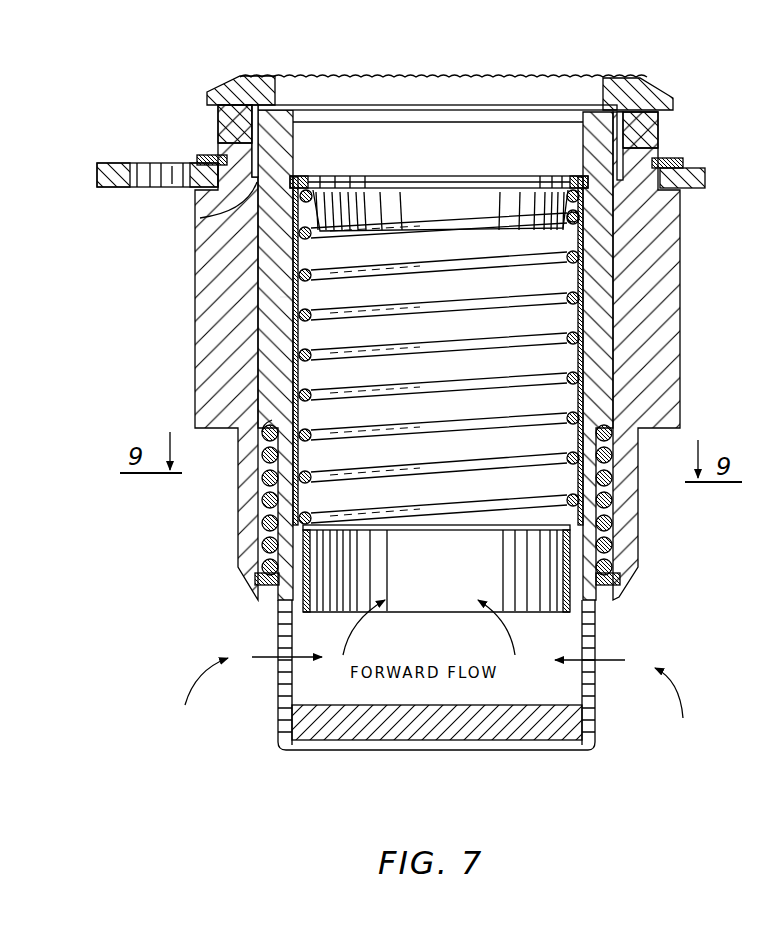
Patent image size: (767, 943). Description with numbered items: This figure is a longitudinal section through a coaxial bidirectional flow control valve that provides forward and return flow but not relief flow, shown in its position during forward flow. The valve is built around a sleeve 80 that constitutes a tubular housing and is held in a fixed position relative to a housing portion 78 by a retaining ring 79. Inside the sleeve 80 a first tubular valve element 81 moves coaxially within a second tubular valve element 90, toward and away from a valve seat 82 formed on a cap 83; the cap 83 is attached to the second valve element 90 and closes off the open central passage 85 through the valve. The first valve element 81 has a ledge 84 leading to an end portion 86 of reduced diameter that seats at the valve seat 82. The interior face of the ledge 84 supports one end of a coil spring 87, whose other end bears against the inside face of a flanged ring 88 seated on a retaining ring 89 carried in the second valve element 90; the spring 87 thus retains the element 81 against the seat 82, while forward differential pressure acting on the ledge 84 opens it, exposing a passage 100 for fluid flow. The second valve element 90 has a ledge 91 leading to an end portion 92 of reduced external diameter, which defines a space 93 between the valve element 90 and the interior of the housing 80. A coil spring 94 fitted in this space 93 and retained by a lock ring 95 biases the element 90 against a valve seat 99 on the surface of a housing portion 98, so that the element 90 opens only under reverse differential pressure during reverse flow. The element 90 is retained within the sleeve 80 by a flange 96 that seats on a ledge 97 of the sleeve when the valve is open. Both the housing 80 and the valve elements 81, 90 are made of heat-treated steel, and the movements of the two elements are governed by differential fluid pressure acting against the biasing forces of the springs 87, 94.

The housing portion 78 is at (197, 186).
The retaining ring 79 is at (200, 157).
The sleeve 80 is at (675, 303).
The first tubular valve element 81 is at (298, 337).
The valve seat 82 is at (315, 705).
The cap 83 is at (408, 735).
The ledge 84 is at (565, 535).
The central passage 85 is at (447, 248).
The end portion 86 is at (565, 573).
The coil spring 87 is at (309, 271).
The flanged ring 88 is at (318, 212).
The retaining ring 89 is at (298, 178).
The second tubular valve element 90 is at (280, 297).
The ledge 91 is at (272, 420).
The end portion 92 is at (286, 500).
The space 93 is at (262, 492).
The coil spring 94 is at (262, 522).
The lock ring 95 is at (262, 602).
The flange 96 is at (250, 118).
The ledge 97 is at (205, 230).
The housing portion 98 is at (278, 90).
The valve seat 99 is at (663, 108).
The passage 100 is at (283, 628).